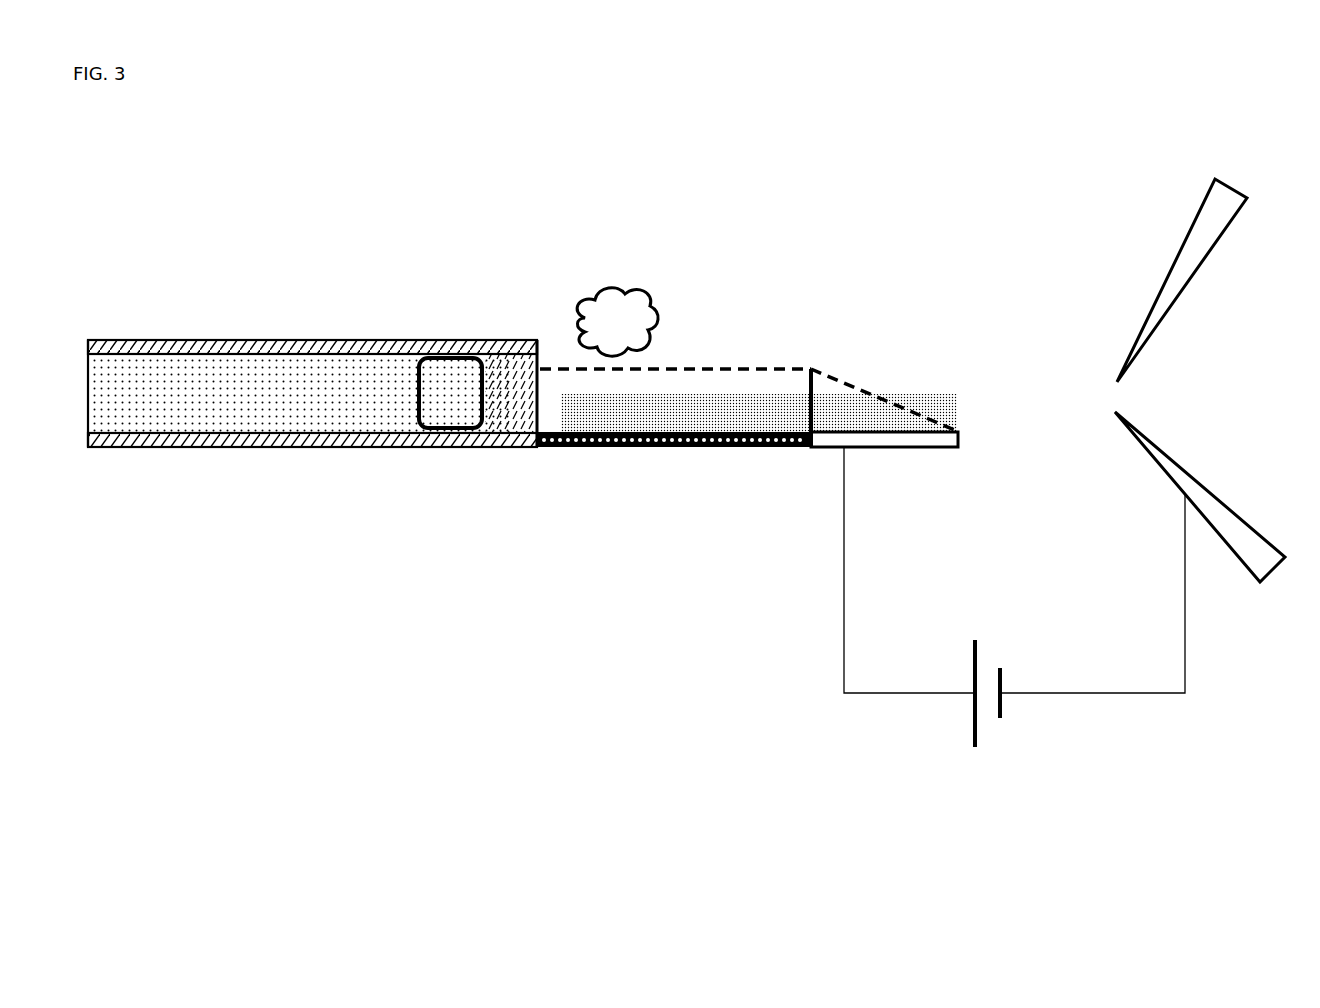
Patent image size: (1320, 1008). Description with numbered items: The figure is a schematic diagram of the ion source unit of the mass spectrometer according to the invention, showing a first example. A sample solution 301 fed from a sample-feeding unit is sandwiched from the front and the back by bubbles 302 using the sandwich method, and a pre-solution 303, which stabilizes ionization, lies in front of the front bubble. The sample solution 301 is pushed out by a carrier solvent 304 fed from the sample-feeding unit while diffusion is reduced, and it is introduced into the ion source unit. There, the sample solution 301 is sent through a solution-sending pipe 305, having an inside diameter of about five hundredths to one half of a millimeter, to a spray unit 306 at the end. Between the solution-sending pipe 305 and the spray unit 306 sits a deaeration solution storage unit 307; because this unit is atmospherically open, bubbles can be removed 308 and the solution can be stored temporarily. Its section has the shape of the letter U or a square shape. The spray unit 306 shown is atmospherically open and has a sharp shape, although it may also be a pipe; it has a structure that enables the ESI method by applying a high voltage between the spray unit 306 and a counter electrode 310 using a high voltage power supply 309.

The sample solution 301 is at (512, 380).
The bubbles 302 is at (445, 395).
The pre-solution 303 is at (758, 395).
The carrier solvent 304 is at (225, 395).
The solution-sending pipe 305 is at (315, 447).
The spray unit 306 is at (882, 447).
The deaeration solution storage unit 307 is at (675, 447).
The bubble removal 308 is at (613, 288).
The high voltage power supply 309 is at (1050, 693).
The counter electrode 310 is at (1160, 280).